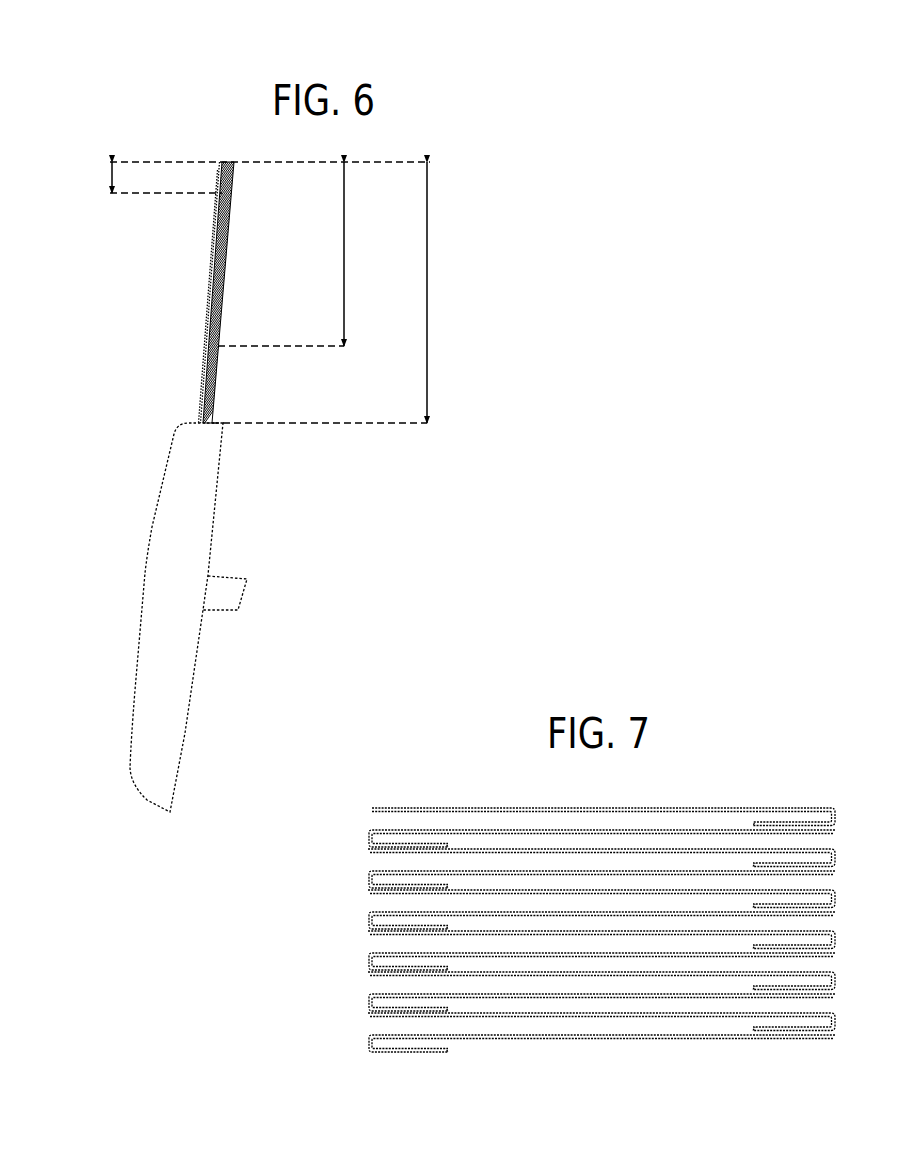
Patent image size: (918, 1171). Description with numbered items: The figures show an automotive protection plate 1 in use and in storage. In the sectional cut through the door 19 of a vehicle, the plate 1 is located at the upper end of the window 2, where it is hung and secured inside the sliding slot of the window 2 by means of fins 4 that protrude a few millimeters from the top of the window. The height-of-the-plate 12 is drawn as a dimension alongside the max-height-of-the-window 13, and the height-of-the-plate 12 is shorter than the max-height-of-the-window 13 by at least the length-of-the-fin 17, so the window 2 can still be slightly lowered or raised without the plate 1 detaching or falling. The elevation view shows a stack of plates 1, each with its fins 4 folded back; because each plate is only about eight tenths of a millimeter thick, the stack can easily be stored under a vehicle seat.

In FIG. 6, the automotive protection plate 1 is at (225, 248).
In FIG. 7, the automotive protection plate 1 is at (568, 966).
In FIG. 6, the window 2 is at (207, 370).
In FIG. 7, the fins 4 is at (412, 1050).
In FIG. 6, the height-of-the-plate 12 is at (302, 254).
In FIG. 6, the max-height-of-the-window 13 is at (339, 292).
In FIG. 6, the length-of-the-fin 17 is at (245, 179).
In FIG. 6, the door 19 is at (158, 565).